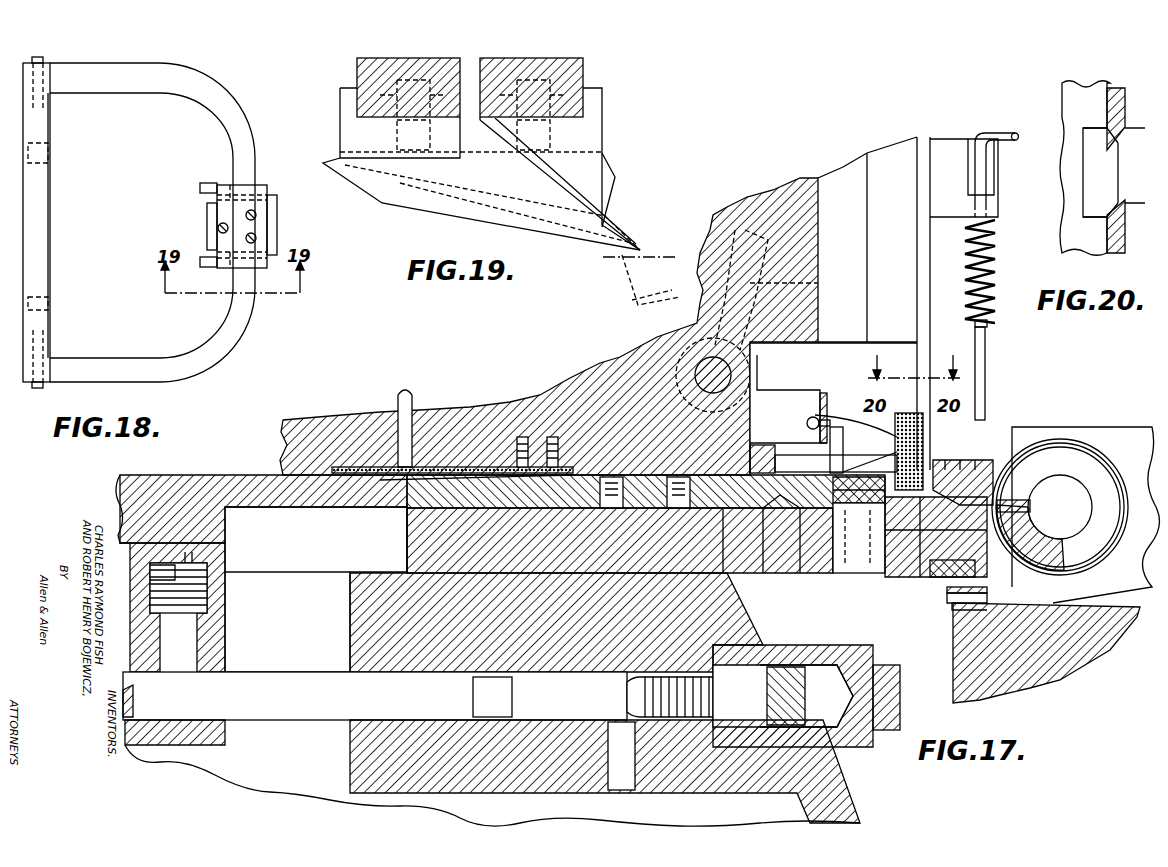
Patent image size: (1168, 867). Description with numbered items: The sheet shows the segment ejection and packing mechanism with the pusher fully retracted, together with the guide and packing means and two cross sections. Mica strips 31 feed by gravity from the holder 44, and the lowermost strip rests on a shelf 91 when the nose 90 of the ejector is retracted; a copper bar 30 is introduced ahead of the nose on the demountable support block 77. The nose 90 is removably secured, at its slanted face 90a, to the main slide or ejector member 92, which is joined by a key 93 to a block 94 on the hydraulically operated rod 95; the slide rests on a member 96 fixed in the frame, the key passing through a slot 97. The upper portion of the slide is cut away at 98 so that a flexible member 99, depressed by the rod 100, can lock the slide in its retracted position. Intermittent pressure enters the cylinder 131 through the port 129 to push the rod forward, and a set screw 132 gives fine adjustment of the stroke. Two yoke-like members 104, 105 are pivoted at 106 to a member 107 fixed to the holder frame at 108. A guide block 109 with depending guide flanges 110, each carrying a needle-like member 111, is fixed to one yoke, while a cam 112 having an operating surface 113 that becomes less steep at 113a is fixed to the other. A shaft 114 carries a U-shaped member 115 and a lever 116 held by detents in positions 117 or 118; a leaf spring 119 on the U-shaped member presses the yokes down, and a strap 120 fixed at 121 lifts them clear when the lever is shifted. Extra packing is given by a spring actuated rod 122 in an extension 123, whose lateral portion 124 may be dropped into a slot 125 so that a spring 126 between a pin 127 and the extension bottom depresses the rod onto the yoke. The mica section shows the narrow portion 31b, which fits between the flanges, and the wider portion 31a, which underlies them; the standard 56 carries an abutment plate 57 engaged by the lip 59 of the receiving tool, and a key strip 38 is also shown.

In FIG. 19, the copper bar 30 is at (622, 285).
In FIG. 17, the copper bar 30 is at (935, 545).
In FIG. 19, the mica strip 31 is at (603, 258).
In FIG. 20, the mica strip 31 is at (1112, 170).
In FIG. 17, the mica strip 31 is at (905, 413).
In FIG. 20, the wide portion of mica strip 31a is at (1085, 127).
In FIG. 20, the narrow portion of mica strip 31b is at (1140, 128).
In FIG. 17, the key strip 38 is at (1000, 582).
In FIG. 20, the holder 44 is at (1115, 90).
In FIG. 17, the holder 44 is at (797, 183).
In FIG. 17, the standard 56 is at (1048, 680).
In FIG. 17, the abutment plate 57 is at (947, 598).
In FIG. 17, the lip 59 is at (952, 608).
In FIG. 17, the demountable support block 77 is at (938, 578).
In FIG. 17, the nose 90 is at (855, 520).
In FIG. 17, the slanted face of nose 90a is at (546, 540).
In FIG. 17, the shelf 91 is at (859, 525).
In FIG. 17, the main slide or ejector member 92 is at (292, 518).
In FIG. 17, the key 93 is at (205, 552).
In FIG. 17, the block 94 is at (225, 647).
In FIG. 17, the rod or shaft 95 is at (275, 718).
In FIG. 17, the member fixed in the frame 96 is at (418, 548).
In FIG. 17, the slot 97 is at (317, 572).
In FIG. 17, the cut-away portion 98 is at (395, 480).
In FIG. 17, the flexible member 99 is at (432, 467).
In FIG. 17, the rod 100 is at (398, 400).
In FIG. 18, the yoke-like member 104 is at (117, 88).
In FIG. 19, the yoke-like member 104 is at (362, 70).
In FIG. 17, the yoke-like member 104 is at (810, 500).
In FIG. 18, the yoke-like member 105 is at (157, 76).
In FIG. 19, the yoke-like member 105 is at (585, 72).
In FIG. 17, the yoke-like member 105 is at (998, 458).
In FIG. 18, the pivot 106 is at (43, 60).
In FIG. 18, the member 107 is at (50, 262).
In FIG. 17, the member 107 is at (760, 500).
In FIG. 18, the fixing point 108 is at (50, 158).
In FIG. 19, the guide block 109 is at (595, 132).
In FIG. 18, the guide flanges 110 is at (205, 183).
In FIG. 19, the guide flanges 110 is at (390, 206).
In FIG. 18, the needle-like member 111 is at (290, 168).
In FIG. 19, the needle-like member 111 is at (540, 180).
In FIG. 17, the needle-like member 111 is at (1010, 500).
In FIG. 18, the cam 112 is at (208, 218).
In FIG. 19, the cam 112 is at (616, 177).
In FIG. 19, the cam operating surface 113 is at (470, 220).
In FIG. 19, the less steep cam portion 113a is at (426, 214).
In FIG. 17, the shaft 114 is at (730, 368).
In FIG. 17, the U-shaped member 115 is at (778, 392).
In FIG. 17, the lever 116 is at (818, 287).
In FIG. 17, the detent position 117 is at (757, 410).
In FIG. 17, the detent position 118 is at (750, 432).
In FIG. 17, the leaf spring 119 is at (950, 458).
In FIG. 17, the strap 120 is at (888, 472).
In FIG. 17, the fixing point of strap 121 is at (855, 405).
In FIG. 17, the spring actuated rod 122 is at (985, 350).
In FIG. 17, the extension 123 is at (960, 105).
In FIG. 17, the lateral extending portion 124 is at (1012, 128).
In FIG. 17, the slot 125 is at (992, 180).
In FIG. 17, the spring 126 is at (996, 255).
In FIG. 17, the pin 127 is at (987, 327).
In FIG. 17, the port 129 is at (620, 770).
In FIG. 17, the cylinder 131 is at (565, 740).
In FIG. 17, the set screw 132 is at (627, 690).